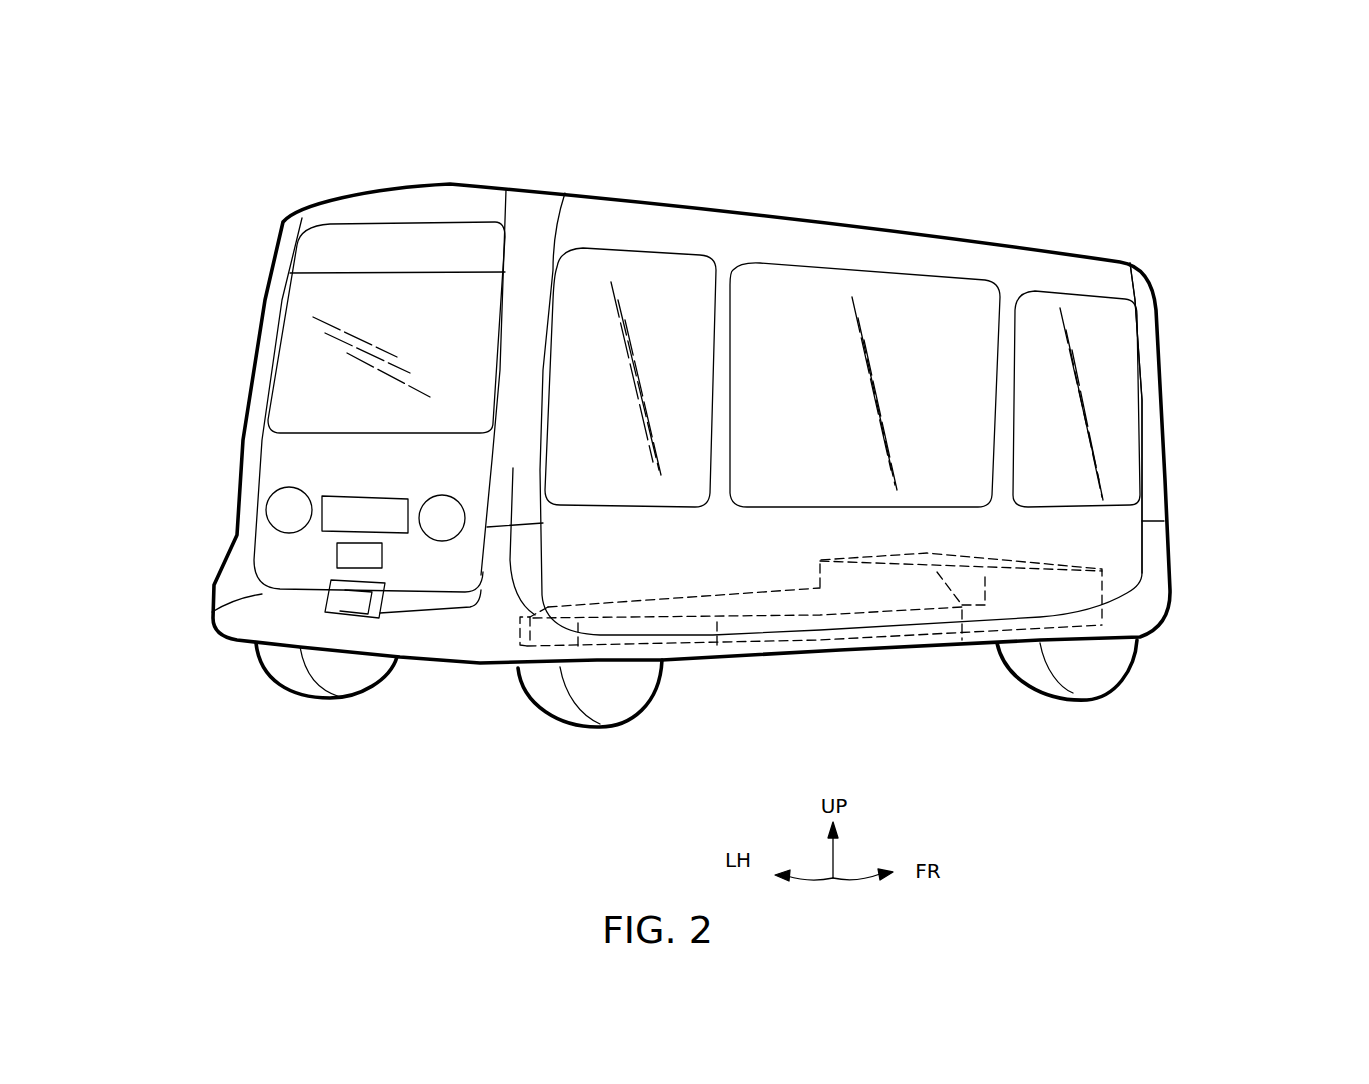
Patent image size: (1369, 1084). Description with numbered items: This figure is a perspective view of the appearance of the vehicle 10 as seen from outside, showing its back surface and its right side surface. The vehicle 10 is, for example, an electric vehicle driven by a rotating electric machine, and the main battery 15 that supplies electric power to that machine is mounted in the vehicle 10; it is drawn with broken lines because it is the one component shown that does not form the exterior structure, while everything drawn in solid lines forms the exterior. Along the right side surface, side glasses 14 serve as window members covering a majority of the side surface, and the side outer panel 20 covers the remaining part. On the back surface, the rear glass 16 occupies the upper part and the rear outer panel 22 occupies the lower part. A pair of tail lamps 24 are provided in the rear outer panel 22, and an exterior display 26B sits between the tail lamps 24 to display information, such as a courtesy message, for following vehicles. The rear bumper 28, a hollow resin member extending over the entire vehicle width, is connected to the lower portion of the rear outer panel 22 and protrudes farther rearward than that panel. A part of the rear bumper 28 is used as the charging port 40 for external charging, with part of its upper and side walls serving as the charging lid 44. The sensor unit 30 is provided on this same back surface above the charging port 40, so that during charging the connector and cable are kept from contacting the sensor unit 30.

The vehicle 10 is at (155, 197).
The side glass 14 is at (667, 290).
The main battery 15 is at (955, 657).
The rear glass 16 is at (290, 363).
The side outer panel 20 is at (1118, 520).
The rear outer panel 22 is at (290, 453).
The tail lamp 24 is at (290, 512).
The exterior display 26B is at (362, 512).
The rear bumper 28 is at (298, 628).
The sensor unit 30 is at (340, 554).
The charging port 40 is at (327, 590).
The charging lid 44 is at (360, 597).